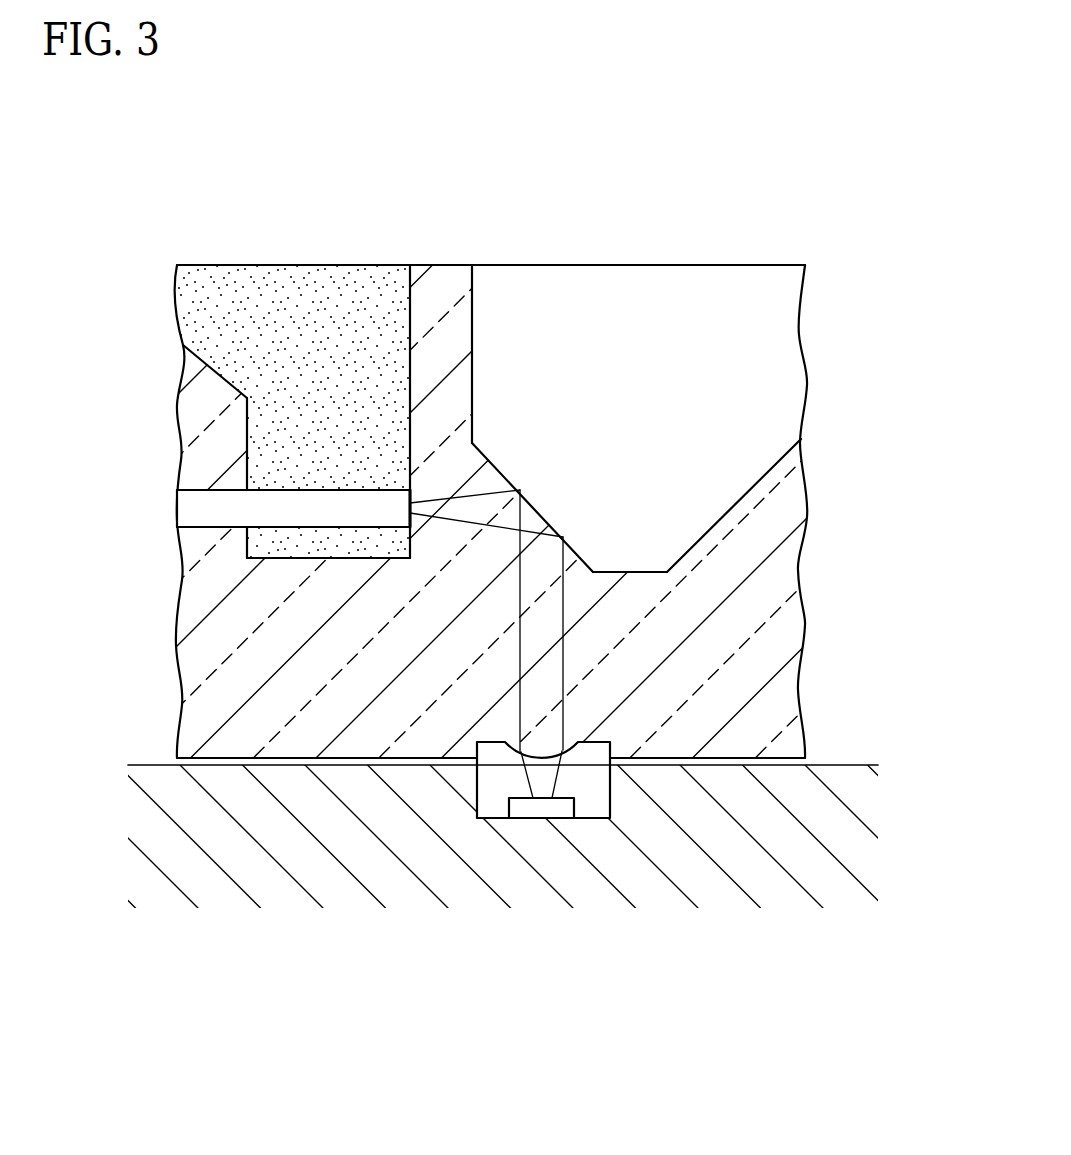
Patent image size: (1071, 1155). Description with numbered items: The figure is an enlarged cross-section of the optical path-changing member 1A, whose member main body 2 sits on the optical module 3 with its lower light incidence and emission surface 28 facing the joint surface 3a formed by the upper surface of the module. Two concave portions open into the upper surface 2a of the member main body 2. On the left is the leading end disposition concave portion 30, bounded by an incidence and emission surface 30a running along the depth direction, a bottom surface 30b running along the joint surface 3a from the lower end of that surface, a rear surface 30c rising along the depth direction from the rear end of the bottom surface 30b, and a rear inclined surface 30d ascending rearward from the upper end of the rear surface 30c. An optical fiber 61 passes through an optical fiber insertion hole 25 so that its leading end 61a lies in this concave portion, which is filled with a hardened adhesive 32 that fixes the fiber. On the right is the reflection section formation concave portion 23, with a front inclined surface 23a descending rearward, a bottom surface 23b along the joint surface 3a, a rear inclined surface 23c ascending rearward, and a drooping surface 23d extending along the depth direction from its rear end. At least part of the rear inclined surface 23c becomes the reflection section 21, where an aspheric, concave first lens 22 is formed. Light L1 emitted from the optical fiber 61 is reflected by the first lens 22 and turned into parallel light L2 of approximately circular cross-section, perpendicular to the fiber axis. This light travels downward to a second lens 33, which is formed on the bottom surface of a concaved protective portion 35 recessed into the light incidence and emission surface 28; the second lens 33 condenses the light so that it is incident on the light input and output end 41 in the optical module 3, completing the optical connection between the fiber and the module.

The optical path-changing member 1A is at (803, 224).
The member main body 2 is at (452, 258).
The upper surface 2a is at (430, 265).
The optical module 3 is at (872, 752).
The joint surface 3a is at (827, 765).
The reflection section 21 is at (528, 490).
The first lens 22 is at (549, 502).
The reflection section formation concave portion 23 is at (665, 283).
The front inclined surface 23a is at (760, 479).
The bottom surface 23b is at (654, 571).
The rear inclined surface 23c is at (484, 456).
The drooping surface 23d is at (473, 314).
The optical fiber insertion hole 25 is at (205, 492).
The light incidence and emission surface 28 is at (668, 760).
The leading end disposition concave portion 30 is at (323, 288).
The incidence and emission surface 30a is at (342, 558).
The bottom surface 30b is at (308, 557).
The rear surface 30c is at (252, 434).
The rear inclined surface 30d is at (203, 361).
The adhesive 32 is at (276, 287).
The second lens 33 is at (520, 743).
The concaved protective portion 35 is at (490, 745).
The light input and output end 41 is at (542, 808).
The optical fiber 61 is at (333, 488).
The leading end 61a is at (412, 527).
The light L1 is at (520, 488).
The parallel light L2 is at (565, 602).